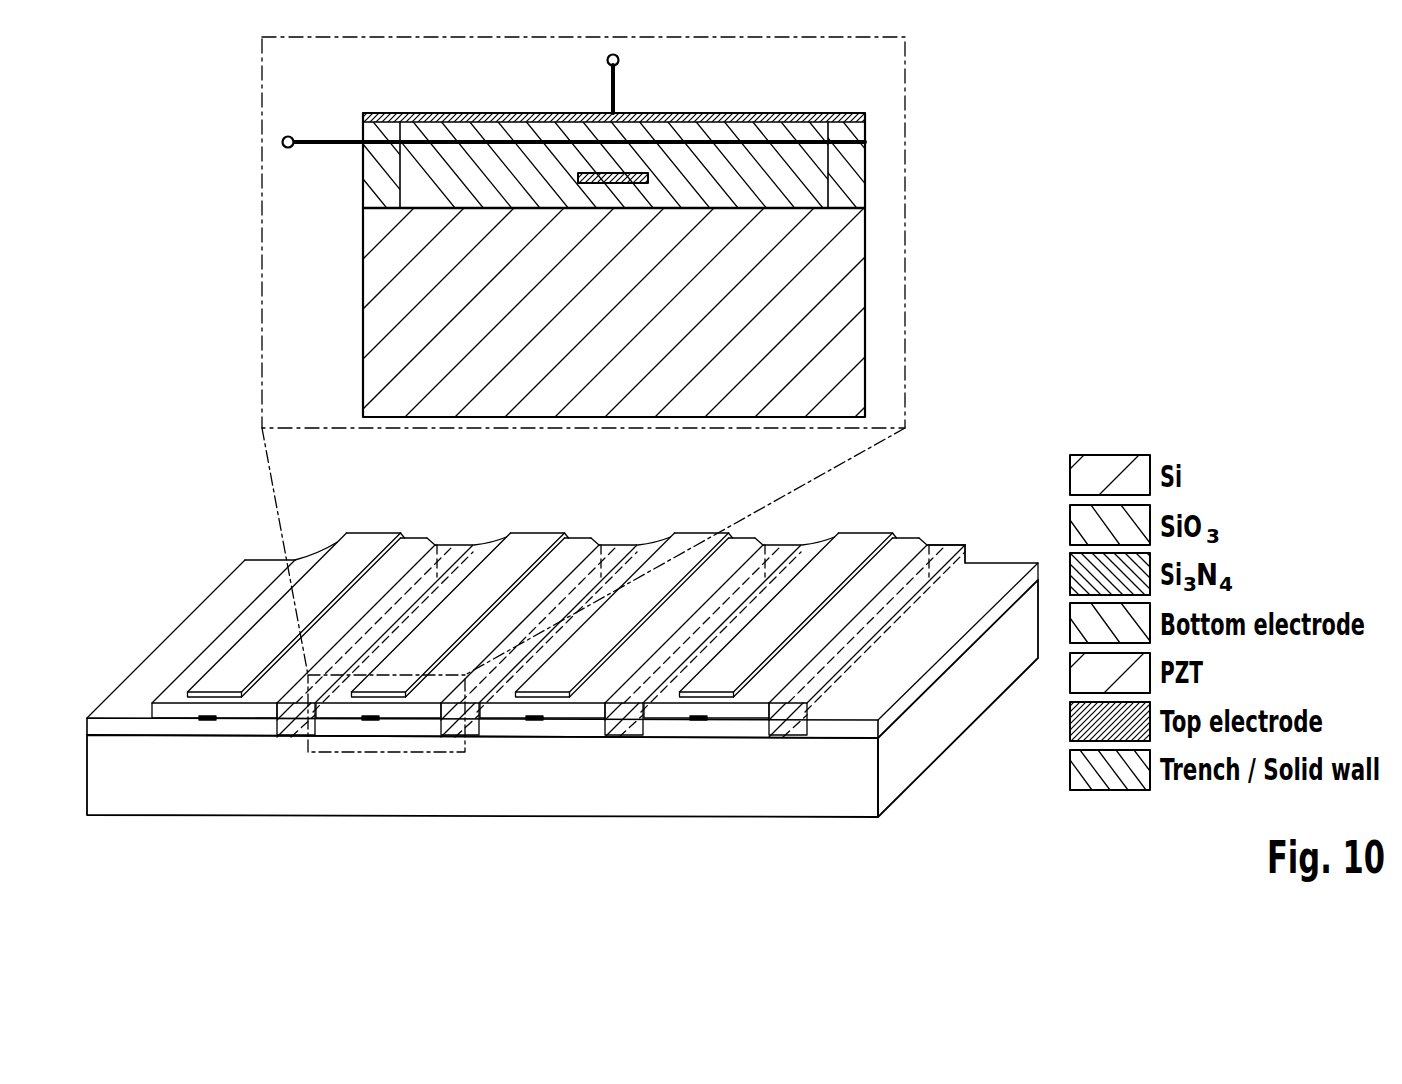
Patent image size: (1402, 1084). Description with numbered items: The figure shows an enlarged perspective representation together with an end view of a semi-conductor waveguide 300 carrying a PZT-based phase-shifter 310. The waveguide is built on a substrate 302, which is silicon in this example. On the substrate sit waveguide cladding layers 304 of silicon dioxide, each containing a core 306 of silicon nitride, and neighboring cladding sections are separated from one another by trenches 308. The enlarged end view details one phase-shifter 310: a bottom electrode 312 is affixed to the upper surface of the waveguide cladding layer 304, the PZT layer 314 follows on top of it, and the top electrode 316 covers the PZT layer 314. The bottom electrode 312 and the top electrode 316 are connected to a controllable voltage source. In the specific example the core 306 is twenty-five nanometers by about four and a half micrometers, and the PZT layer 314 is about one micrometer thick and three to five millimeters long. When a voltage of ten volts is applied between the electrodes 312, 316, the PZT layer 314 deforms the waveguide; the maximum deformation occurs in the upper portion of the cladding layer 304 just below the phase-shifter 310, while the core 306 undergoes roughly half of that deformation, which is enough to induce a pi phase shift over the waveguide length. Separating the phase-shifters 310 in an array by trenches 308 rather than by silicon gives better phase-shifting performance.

The semi-conductor waveguide 300 is at (176, 550).
The substrate 302 is at (838, 820).
The waveguide cladding layer 304 is at (187, 640).
The core 306 is at (205, 722).
The trench 308 is at (945, 545).
The PZT-based phase-shifter 310 is at (870, 92).
The bottom electrode 312 is at (456, 138).
The PZT layer 314 is at (813, 128).
The top electrode 316 is at (760, 118).